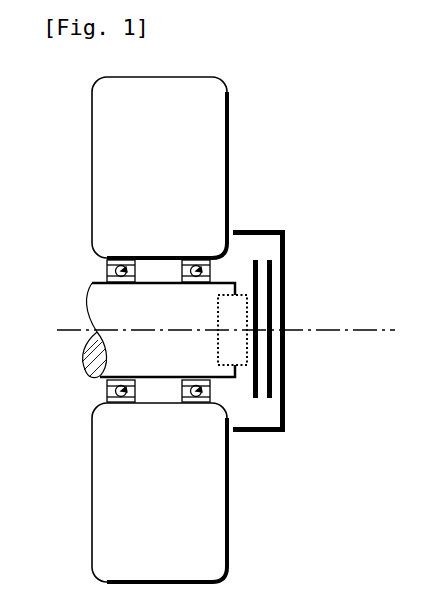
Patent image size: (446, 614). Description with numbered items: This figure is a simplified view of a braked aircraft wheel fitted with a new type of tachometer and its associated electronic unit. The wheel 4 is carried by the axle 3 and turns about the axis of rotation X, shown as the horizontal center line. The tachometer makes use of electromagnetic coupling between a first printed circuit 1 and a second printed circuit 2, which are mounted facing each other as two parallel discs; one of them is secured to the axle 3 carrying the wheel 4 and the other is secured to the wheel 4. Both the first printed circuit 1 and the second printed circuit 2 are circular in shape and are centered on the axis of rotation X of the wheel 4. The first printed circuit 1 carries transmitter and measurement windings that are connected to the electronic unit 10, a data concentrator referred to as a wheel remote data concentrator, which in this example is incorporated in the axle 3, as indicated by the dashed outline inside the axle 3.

The first printed circuit 1 is at (254, 393).
The second printed circuit 2 is at (273, 385).
The axle 3 is at (91, 284).
The wheel 4 is at (256, 118).
The electronic unit 10 is at (242, 309).
The axis of rotation X is at (378, 327).